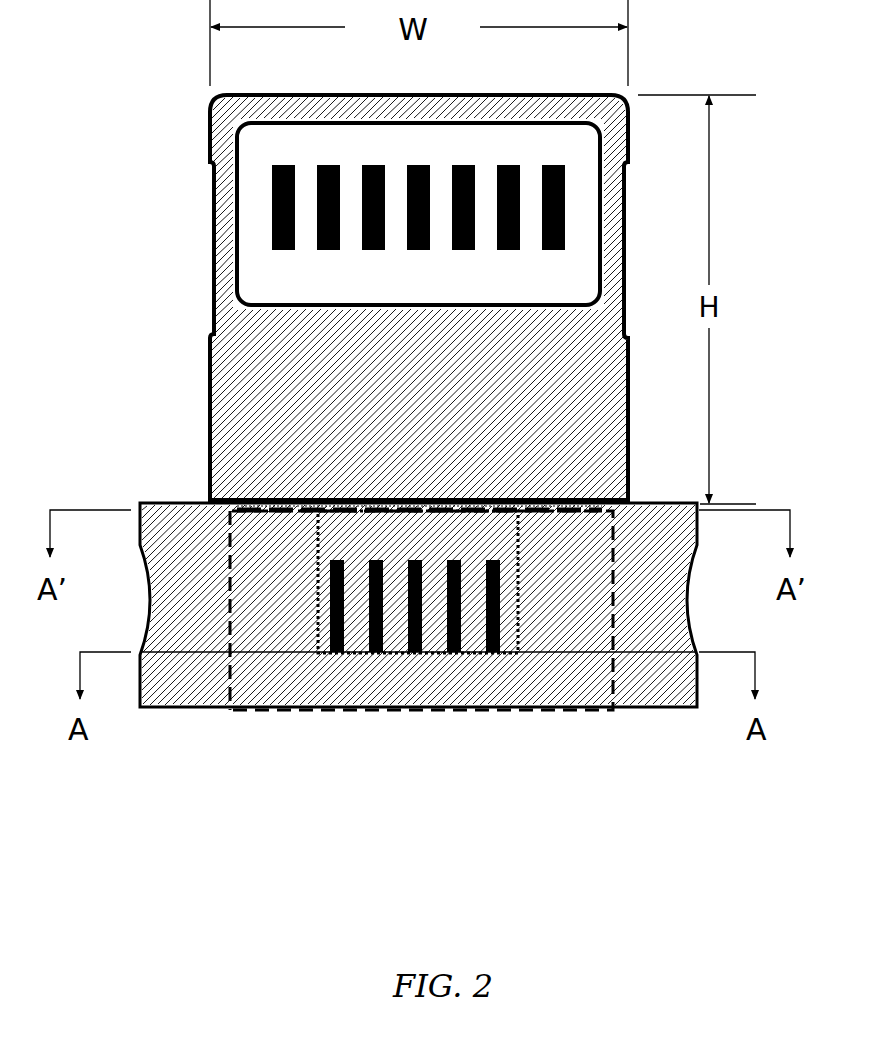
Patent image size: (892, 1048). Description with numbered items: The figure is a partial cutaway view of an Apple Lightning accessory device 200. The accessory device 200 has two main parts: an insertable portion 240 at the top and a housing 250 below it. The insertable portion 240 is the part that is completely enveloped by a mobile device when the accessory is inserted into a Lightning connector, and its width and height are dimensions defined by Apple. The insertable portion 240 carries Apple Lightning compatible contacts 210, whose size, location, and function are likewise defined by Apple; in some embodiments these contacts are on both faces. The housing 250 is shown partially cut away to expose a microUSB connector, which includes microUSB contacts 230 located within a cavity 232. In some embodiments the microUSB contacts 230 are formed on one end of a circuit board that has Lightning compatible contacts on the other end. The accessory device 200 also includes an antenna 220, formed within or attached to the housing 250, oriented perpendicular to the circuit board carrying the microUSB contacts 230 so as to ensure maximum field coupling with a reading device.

The accessory device 200 is at (418, 517).
The Apple Lightning compatible contacts 210 is at (328, 306).
The antenna 220 is at (568, 500).
The microUSB contacts 230 is at (519, 578).
The cavity 232 is at (228, 540).
The insertable portion 240 is at (209, 412).
The housing 250 is at (623, 710).